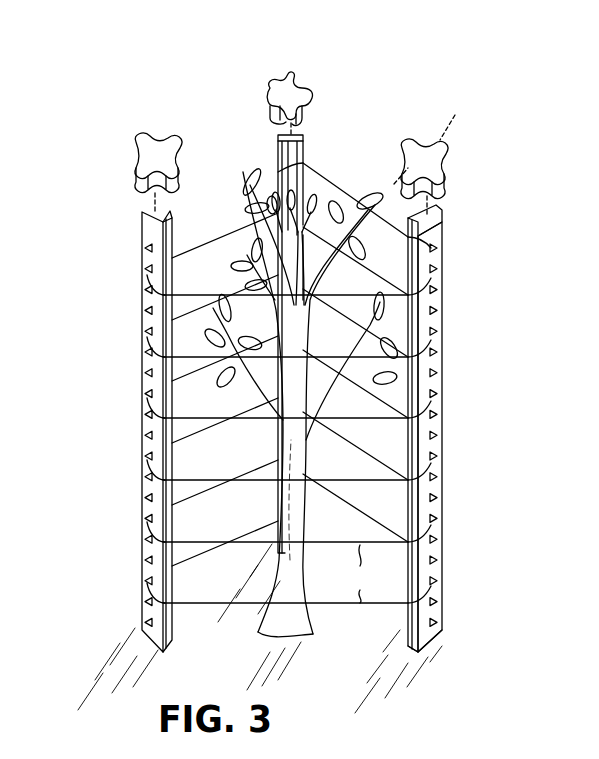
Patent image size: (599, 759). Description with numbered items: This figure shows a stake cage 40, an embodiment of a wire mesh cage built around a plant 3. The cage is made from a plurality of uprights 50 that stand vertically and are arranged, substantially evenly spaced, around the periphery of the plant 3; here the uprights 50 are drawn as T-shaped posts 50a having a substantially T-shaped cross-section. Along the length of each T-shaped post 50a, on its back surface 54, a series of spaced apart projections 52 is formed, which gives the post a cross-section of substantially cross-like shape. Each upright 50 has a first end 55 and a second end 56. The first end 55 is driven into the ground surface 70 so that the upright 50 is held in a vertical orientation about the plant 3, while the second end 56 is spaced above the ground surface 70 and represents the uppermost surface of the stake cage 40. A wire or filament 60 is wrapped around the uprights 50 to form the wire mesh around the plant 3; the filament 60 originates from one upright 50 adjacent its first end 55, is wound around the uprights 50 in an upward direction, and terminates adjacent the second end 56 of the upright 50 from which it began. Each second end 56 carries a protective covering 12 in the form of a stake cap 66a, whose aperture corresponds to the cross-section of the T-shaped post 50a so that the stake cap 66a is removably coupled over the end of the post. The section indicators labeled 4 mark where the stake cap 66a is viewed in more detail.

The stake cage 40 is at (121, 115).
The stake cap 66a is at (172, 137).
The protective covering 12 is at (313, 79).
The uprights 50 is at (141, 225).
The T-shaped posts 50a is at (303, 143).
The section view indicator 4 is at (392, 185).
The second end 56 is at (442, 216).
The back surface 54 is at (432, 234).
The projections 52 is at (440, 288).
The plant 3 is at (306, 447).
The filament 60 is at (363, 574).
The ground surface 70 is at (352, 672).
The first end 55 is at (442, 630).